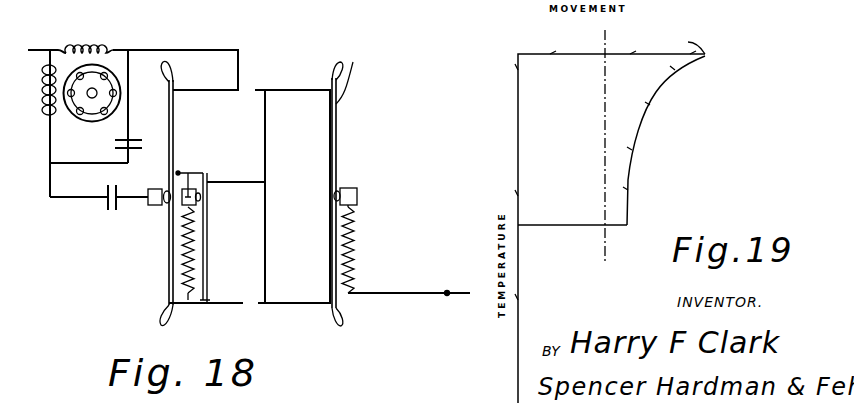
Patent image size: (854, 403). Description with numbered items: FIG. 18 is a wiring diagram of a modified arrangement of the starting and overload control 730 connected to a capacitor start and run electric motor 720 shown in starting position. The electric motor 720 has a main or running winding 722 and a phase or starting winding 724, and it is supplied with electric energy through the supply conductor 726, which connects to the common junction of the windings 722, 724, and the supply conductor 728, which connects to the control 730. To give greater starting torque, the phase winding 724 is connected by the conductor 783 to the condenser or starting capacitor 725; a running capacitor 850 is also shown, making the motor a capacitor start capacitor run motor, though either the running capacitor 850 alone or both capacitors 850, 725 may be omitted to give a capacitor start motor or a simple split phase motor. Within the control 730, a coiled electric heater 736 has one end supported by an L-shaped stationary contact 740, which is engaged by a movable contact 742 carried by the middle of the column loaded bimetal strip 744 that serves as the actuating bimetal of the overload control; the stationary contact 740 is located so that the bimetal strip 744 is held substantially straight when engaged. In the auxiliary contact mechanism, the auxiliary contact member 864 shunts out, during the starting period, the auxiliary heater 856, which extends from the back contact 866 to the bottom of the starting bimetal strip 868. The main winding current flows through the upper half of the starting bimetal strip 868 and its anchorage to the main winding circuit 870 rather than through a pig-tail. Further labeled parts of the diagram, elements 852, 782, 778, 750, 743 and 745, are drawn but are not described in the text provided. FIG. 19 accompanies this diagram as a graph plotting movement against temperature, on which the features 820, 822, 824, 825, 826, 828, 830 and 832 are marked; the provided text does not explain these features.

In FIG. 18, the supply conductor 726 is at (50, 50).
In FIG. 18, the main or running winding 722 is at (108, 50).
In FIG. 18, the phase or starting winding 724 is at (50, 115).
In FIG. 18, the electric motor 720 is at (121, 90).
In FIG. 18, the running capacitor 850 is at (133, 140).
In FIG. 18, the conductor 852 is at (106, 162).
In FIG. 18, the conductor 783 is at (55, 195).
In FIG. 18, the starting capacitor 725 is at (106, 208).
In FIG. 18, the conductor 782 is at (135, 200).
In FIG. 18, the contact 778 is at (160, 186).
In FIG. 18, the starting bimetal strip 868 is at (169, 288).
In FIG. 18, the main winding circuit 870 is at (205, 50).
In FIG. 18, the back contact 866 is at (190, 185).
In FIG. 18, the auxiliary contact member 864 is at (207, 220).
In FIG. 18, the auxiliary heater 856 is at (190, 258).
In FIG. 18, the starting and overload control 730 is at (246, 329).
In FIG. 18, the frame 750 is at (266, 146).
In FIG. 18, the column loaded bimetal strip 744 is at (336, 125).
In FIG. 18, the upper end of bimetal 743 is at (330, 73).
In FIG. 18, the lower end of bimetal 745 is at (329, 318).
In FIG. 18, the movable contact 742 is at (338, 190).
In FIG. 18, the L-shaped stationary contact 740 is at (357, 196).
In FIG. 18, the coiled electric heater 736 is at (350, 250).
In FIG. 18, the supply conductor 728 is at (412, 293).
In FIG. 19, the axis 822 is at (518, 54).
In FIG. 19, the reference line 825 is at (605, 54).
In FIG. 19, the curve start point 824 is at (678, 41).
In FIG. 19, the characteristic curve 826 is at (637, 145).
In FIG. 19, the curve end point 828 is at (630, 220).
In FIG. 19, the temperature point 830 is at (520, 228).
In FIG. 19, the temperature point 832 is at (612, 228).
In FIG. 19, the origin point 820 is at (518, 395).